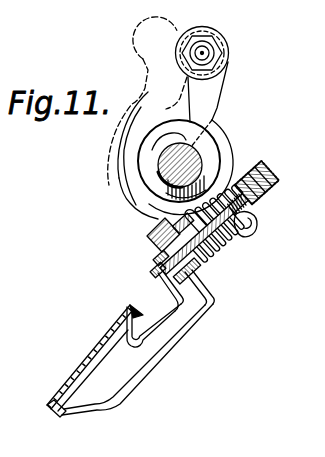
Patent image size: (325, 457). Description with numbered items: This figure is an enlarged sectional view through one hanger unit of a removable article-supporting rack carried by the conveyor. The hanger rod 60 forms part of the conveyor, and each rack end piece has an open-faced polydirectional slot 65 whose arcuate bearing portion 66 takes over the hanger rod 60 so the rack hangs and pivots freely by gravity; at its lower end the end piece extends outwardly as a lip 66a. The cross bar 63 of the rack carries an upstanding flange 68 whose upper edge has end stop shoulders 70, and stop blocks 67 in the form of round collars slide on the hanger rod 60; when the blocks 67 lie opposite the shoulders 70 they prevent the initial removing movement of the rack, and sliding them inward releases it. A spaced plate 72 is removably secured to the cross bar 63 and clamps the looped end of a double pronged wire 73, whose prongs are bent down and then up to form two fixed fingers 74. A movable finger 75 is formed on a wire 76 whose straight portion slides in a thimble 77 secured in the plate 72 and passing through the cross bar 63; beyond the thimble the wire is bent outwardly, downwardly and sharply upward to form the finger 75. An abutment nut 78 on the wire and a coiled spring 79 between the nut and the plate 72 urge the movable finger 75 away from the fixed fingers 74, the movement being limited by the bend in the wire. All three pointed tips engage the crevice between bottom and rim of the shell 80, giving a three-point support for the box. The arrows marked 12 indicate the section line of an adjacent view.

The hanger rod 60 is at (214, 119).
The cross bar 63 is at (203, 279).
The open-faced polydirectional slot 65 is at (225, 168).
The arcuate bearing portion 66 is at (137, 156).
The lip 66a is at (244, 236).
The stop blocks 67 is at (209, 161).
The flange 68 is at (158, 215).
The end stop shoulders 70 is at (183, 210).
The spaced plate 72 is at (190, 300).
The double pronged wire 73 is at (142, 378).
The fixed fingers 74 is at (82, 388).
The movable finger 75 is at (122, 322).
The wire 76 is at (147, 260).
The thimble 77 is at (212, 250).
The abutment nut 78 is at (271, 178).
The coiled spring 79 is at (260, 200).
The shell 80 is at (77, 369).
The section line 12- 12 is at (78, 182).